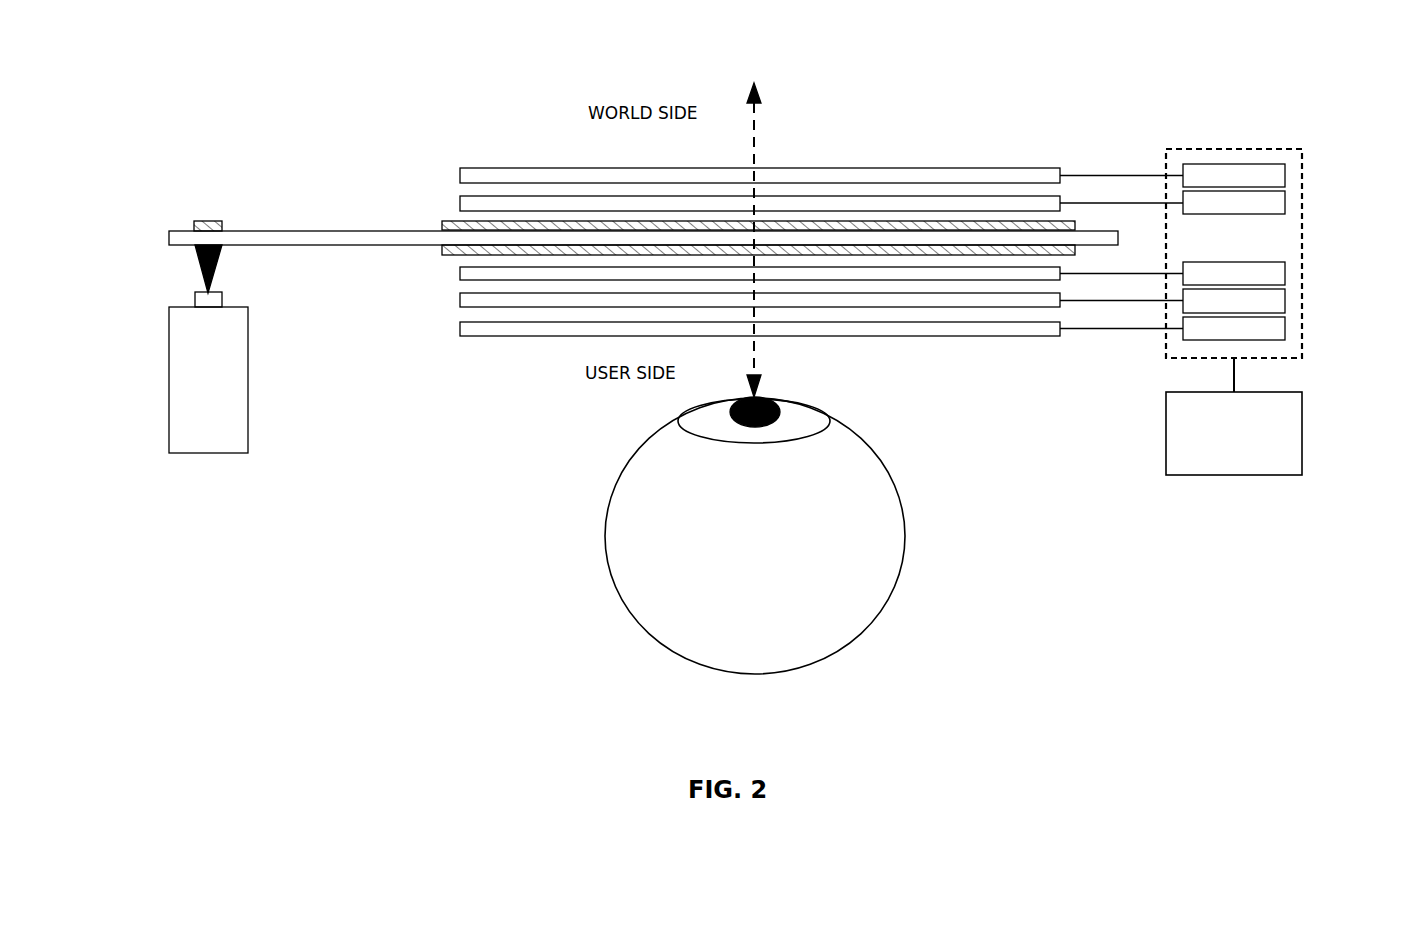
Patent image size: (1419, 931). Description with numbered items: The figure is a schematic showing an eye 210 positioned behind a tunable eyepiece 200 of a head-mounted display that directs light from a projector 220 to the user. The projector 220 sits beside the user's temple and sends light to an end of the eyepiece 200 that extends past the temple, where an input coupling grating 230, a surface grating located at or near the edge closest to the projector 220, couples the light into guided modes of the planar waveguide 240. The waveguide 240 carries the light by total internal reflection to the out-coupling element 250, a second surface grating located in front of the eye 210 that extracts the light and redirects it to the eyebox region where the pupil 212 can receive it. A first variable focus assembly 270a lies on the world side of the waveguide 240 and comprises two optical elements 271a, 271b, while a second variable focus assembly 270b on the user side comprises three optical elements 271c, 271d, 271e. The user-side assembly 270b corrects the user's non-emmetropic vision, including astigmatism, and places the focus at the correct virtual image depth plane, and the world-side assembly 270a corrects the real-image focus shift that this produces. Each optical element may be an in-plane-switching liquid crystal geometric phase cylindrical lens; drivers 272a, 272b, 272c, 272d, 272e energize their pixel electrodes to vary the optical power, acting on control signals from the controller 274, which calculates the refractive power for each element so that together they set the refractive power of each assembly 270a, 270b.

The eyepiece 200 is at (955, 97).
The eye 210 is at (755, 536).
The pupil 212 is at (780, 408).
The projector 220 is at (208, 349).
The input coupling grating 230 is at (193, 227).
The planar waveguide 240 is at (170, 240).
The out-coupling element 250 is at (442, 226).
The first variable focus assembly 270a is at (378, 108).
The second variable focus assembly 270b is at (395, 371).
The optical element 271a is at (460, 176).
The optical element 271b is at (460, 203).
The optical element 271c is at (460, 270).
The optical element 271d is at (460, 297).
The optical element 271e is at (460, 325).
The driver 272a is at (1285, 175).
The driver 272b is at (1285, 203).
The driver 272c is at (1285, 273).
The driver 272d is at (1285, 301).
The driver 272e is at (1285, 328).
The controller 274 is at (1302, 437).